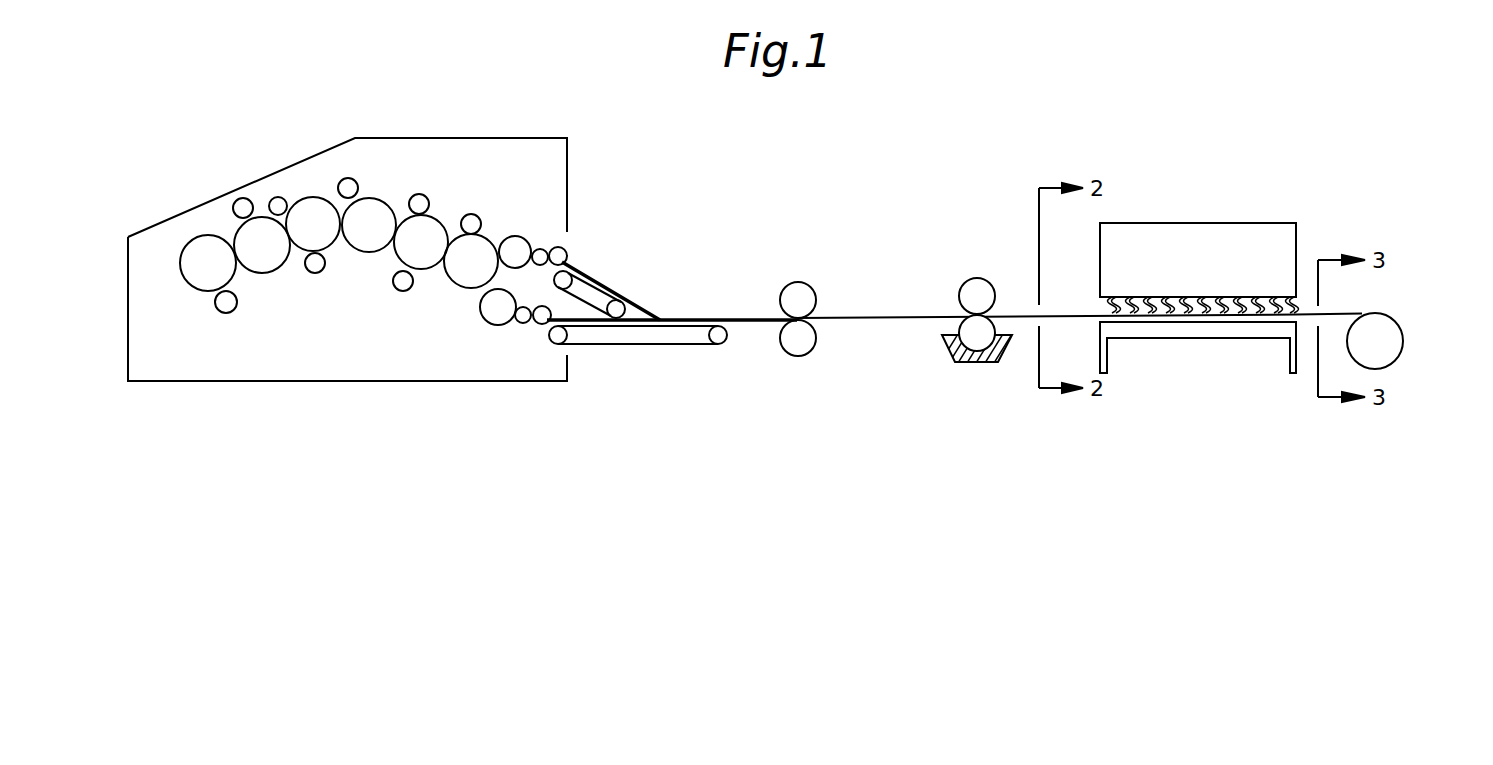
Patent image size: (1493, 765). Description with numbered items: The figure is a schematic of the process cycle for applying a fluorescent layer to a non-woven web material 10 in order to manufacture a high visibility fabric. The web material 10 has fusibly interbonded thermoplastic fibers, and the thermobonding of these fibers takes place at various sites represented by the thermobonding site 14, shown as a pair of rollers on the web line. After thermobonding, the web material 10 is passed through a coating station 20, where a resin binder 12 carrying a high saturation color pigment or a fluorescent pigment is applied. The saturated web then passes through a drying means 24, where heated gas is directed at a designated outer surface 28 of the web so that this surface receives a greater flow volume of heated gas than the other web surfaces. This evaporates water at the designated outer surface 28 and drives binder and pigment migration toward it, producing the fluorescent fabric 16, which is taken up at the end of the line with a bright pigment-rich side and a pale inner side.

The non-woven web material 10 is at (748, 322).
The resin binder 12 is at (962, 365).
The thermobonding site 14 is at (817, 343).
The fluorescent fabric 16 is at (1377, 312).
The coating station 20 is at (962, 310).
The drying means 24 is at (1287, 259).
The designated outer surface 28 is at (1362, 313).